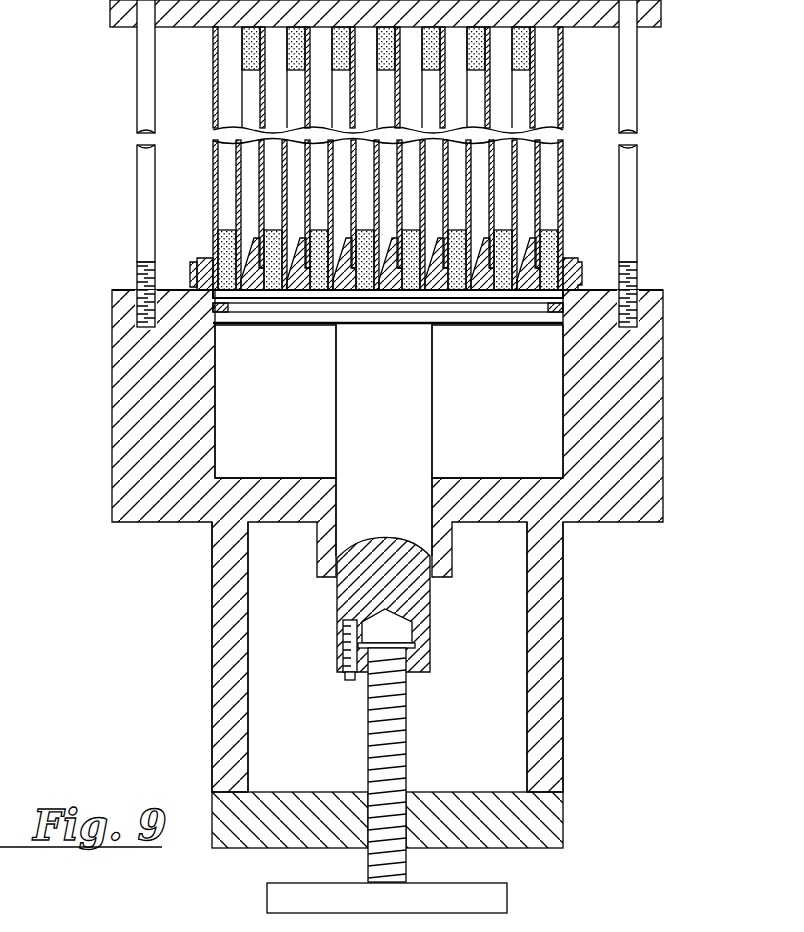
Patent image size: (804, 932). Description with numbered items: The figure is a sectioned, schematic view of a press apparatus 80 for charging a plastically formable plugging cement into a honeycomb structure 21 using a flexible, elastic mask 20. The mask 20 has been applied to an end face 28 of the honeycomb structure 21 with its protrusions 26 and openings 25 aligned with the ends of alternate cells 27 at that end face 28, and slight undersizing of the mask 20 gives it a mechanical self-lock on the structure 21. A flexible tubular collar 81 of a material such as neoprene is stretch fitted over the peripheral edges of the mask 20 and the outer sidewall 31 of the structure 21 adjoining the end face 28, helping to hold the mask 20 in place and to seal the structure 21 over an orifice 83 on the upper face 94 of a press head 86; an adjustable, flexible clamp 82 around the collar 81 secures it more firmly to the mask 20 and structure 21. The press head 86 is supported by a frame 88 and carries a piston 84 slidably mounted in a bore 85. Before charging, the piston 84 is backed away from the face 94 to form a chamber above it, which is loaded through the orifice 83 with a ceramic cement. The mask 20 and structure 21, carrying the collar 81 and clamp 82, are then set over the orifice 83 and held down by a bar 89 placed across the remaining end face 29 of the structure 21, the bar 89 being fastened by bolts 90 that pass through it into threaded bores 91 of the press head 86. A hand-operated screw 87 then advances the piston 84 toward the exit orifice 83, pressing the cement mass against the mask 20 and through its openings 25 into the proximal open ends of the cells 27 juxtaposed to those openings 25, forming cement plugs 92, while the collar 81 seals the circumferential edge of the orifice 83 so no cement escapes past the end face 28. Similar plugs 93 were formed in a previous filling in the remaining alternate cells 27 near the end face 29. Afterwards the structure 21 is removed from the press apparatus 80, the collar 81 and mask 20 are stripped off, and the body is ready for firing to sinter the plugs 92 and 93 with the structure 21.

The flexible mask 20 is at (533, 250).
The honeycomb structure 21 is at (570, 177).
The openings 25 is at (500, 292).
The protrusions 26 is at (427, 292).
The cells 27 is at (548, 100).
The end face 28 is at (308, 292).
The remaining end face 29 is at (215, 14).
The outer sidewall 31 is at (565, 66).
The press apparatus 80 is at (570, 801).
The flexible tubular collar 81 is at (205, 260).
The adjustable flexible clamp 82 is at (192, 270).
The orifice 83 is at (200, 290).
The piston 84 is at (468, 325).
The bore 85 is at (243, 375).
The press head 86 is at (112, 472).
The hand-operated screw 87 is at (500, 898).
The frame 88 is at (212, 680).
The bar 89 is at (663, 9).
The bolts 90 is at (631, 57).
The threaded bores 91 is at (633, 312).
The cement plugs 92 is at (322, 230).
The plugs 93 is at (247, 60).
The upper face 94 is at (593, 287).